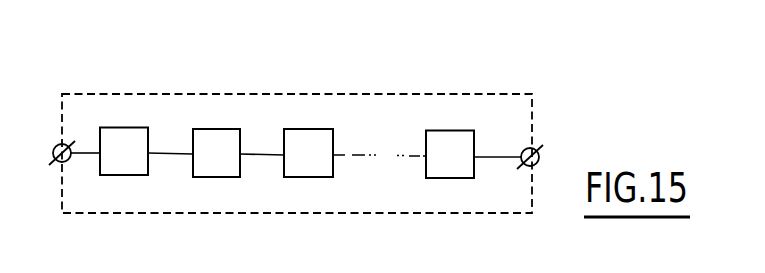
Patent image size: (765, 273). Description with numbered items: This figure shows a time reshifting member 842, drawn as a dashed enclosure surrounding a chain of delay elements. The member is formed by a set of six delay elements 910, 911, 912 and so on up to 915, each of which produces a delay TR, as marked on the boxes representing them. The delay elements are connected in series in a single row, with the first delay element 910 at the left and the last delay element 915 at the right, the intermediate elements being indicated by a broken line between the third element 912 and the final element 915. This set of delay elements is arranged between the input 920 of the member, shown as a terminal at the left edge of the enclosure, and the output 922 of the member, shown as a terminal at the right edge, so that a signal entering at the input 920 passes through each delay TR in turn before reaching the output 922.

The time reshifting member 842 is at (395, 94).
The input 920 is at (57, 144).
The output 922 is at (538, 150).
The delay element 910 is at (123, 175).
The delay element 911 is at (218, 177).
The delay element 912 is at (308, 177).
The delay element 915 is at (449, 178).